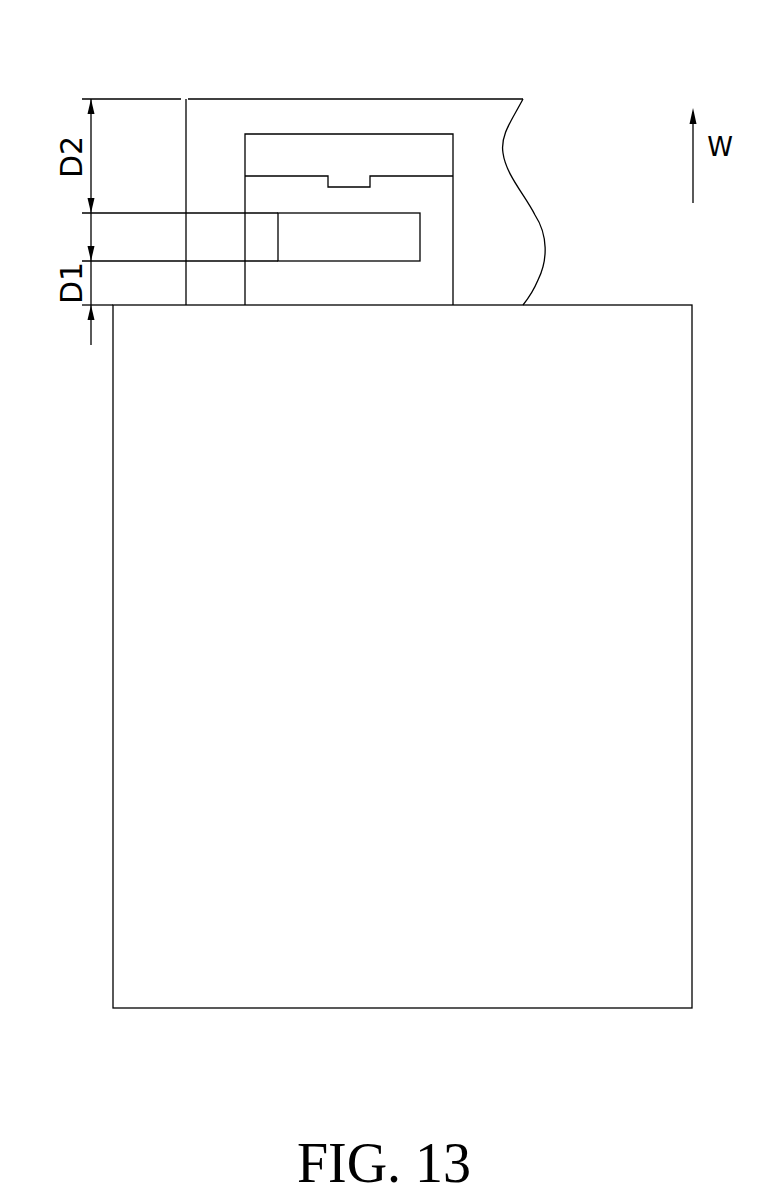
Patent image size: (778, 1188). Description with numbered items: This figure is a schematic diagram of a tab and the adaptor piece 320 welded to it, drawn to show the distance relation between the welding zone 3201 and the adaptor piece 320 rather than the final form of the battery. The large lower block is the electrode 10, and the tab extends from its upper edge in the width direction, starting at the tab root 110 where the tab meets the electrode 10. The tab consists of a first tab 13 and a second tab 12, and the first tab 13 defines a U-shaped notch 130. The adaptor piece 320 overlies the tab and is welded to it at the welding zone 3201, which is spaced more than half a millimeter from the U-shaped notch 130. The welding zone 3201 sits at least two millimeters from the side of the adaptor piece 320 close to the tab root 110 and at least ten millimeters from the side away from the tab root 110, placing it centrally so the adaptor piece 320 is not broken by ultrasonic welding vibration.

The electrode 10 is at (473, 948).
The adaptor piece 320 is at (225, 130).
The second tab 12 is at (432, 148).
The U-shaped notch 130 is at (350, 185).
The welding zone 3201 is at (405, 232).
The first tab 13 is at (395, 287).
The tab root 110 is at (457, 301).